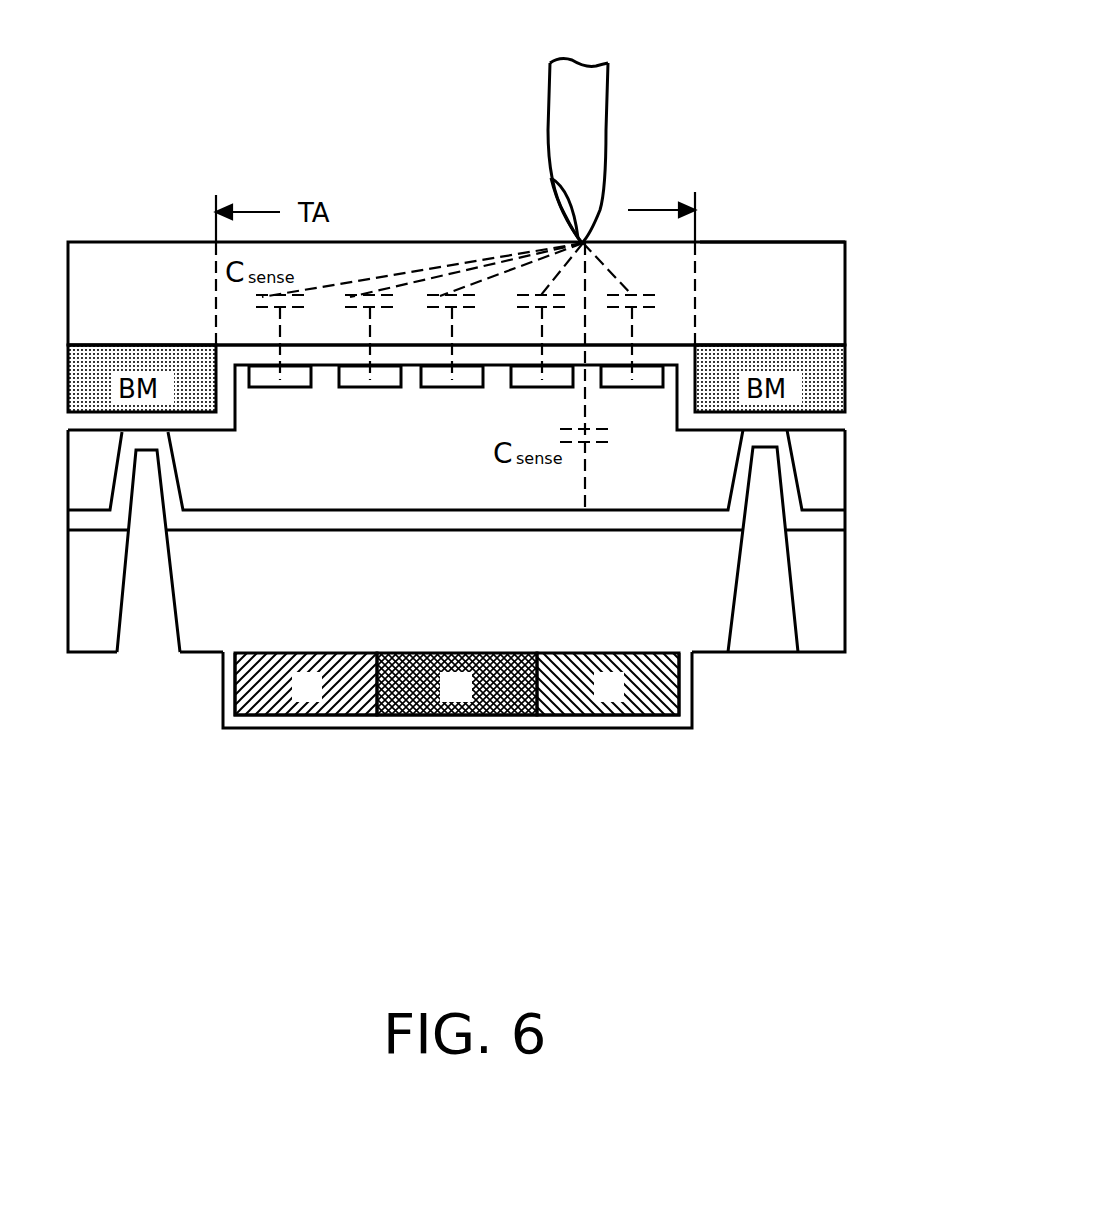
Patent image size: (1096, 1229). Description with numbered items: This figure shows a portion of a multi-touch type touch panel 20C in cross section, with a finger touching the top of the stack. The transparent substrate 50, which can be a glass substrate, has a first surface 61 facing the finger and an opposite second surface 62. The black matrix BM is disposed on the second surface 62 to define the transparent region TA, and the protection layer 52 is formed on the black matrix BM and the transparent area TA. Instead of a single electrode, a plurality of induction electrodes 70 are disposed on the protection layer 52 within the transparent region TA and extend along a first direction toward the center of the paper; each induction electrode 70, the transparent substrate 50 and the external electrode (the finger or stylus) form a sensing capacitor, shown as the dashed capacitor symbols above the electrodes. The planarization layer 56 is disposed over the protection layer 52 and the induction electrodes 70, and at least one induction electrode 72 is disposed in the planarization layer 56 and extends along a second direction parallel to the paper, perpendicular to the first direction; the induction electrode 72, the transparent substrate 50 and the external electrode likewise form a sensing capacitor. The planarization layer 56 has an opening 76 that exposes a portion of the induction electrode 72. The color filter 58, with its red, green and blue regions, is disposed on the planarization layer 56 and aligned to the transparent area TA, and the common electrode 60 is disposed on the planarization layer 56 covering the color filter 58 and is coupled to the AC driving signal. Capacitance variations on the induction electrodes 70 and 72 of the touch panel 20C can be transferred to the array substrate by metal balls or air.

The transparent substrate 50 is at (845, 287).
The first surface 61 is at (768, 240).
The second surface 62 is at (845, 345).
The protection layer 52 is at (845, 413).
The induction electrodes 70 is at (282, 390).
The planarization layer 56 is at (845, 465).
The induction electrode 72 is at (845, 508).
The opening 76 is at (147, 627).
The color filter 58 is at (680, 668).
The common electrode 60 is at (692, 700).
The touch panel 20C is at (608, 802).